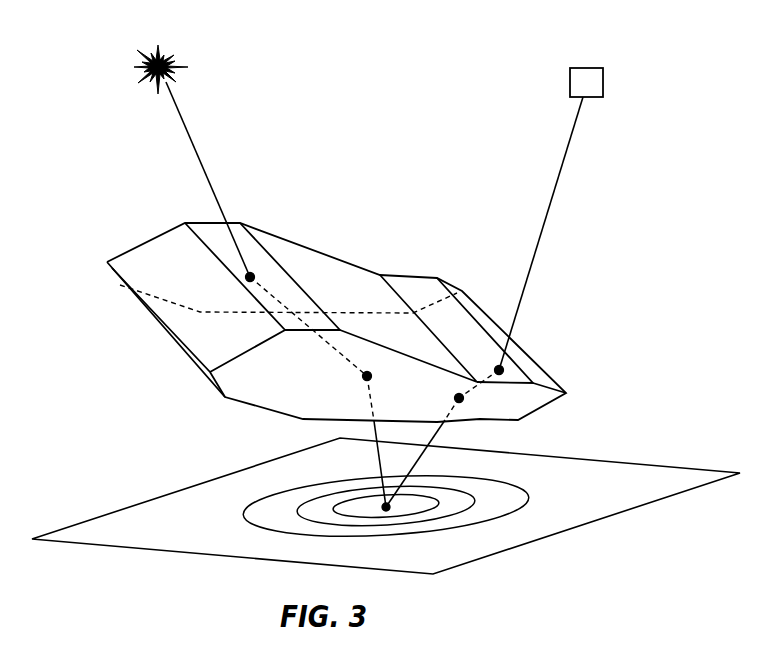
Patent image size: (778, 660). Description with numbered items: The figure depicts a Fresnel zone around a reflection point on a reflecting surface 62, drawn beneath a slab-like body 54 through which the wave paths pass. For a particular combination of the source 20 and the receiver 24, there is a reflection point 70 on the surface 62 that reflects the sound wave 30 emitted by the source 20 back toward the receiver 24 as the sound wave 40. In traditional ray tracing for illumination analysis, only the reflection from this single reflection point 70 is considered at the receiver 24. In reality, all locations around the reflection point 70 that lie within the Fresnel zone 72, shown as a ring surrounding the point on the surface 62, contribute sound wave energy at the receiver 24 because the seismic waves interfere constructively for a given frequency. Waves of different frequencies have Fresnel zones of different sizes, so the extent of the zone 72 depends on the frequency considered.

The source 20 is at (160, 56).
The receiver 24 is at (592, 68).
The sound wave 30 is at (190, 137).
The sound wave 40 is at (563, 167).
The crystal / optical body 54 is at (303, 243).
The surface 62 is at (243, 513).
The reflection point 70 is at (386, 507).
The Fresnel zone 72 is at (477, 500).